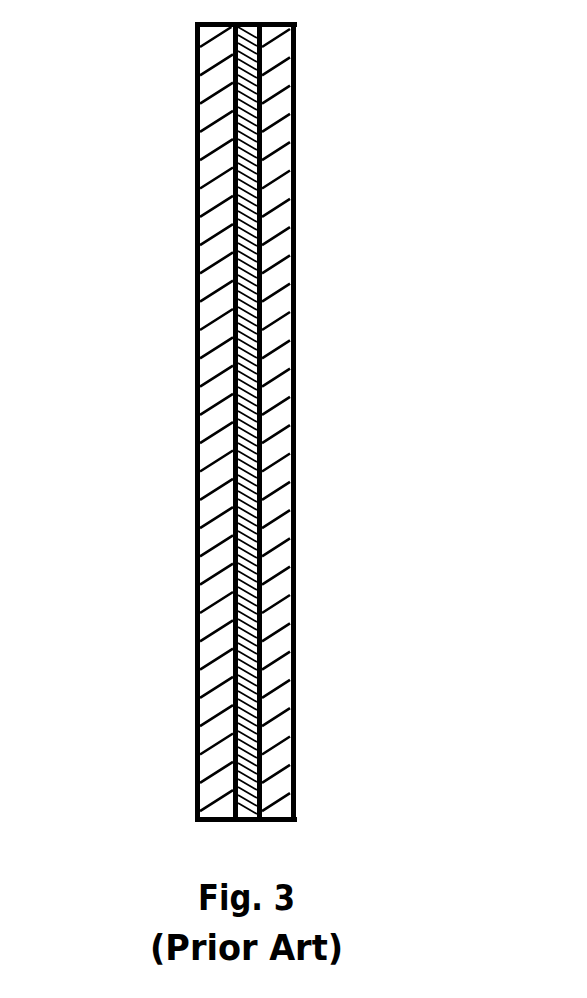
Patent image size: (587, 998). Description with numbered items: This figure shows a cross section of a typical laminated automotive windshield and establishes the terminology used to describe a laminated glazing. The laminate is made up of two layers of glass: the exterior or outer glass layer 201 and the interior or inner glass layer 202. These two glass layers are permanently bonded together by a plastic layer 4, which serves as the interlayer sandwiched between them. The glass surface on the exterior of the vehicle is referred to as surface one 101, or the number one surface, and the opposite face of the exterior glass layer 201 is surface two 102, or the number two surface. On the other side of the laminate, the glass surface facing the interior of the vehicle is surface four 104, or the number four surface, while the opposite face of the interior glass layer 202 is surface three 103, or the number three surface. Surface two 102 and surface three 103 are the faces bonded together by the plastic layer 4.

The plastic layer 4 is at (236, 296).
The surface one 101 is at (185, 392).
The surface two 102 is at (222, 467).
The surface three 103 is at (273, 393).
The surface four 104 is at (311, 463).
The exterior glass layer 201 is at (207, 131).
The interior glass layer 202 is at (283, 135).